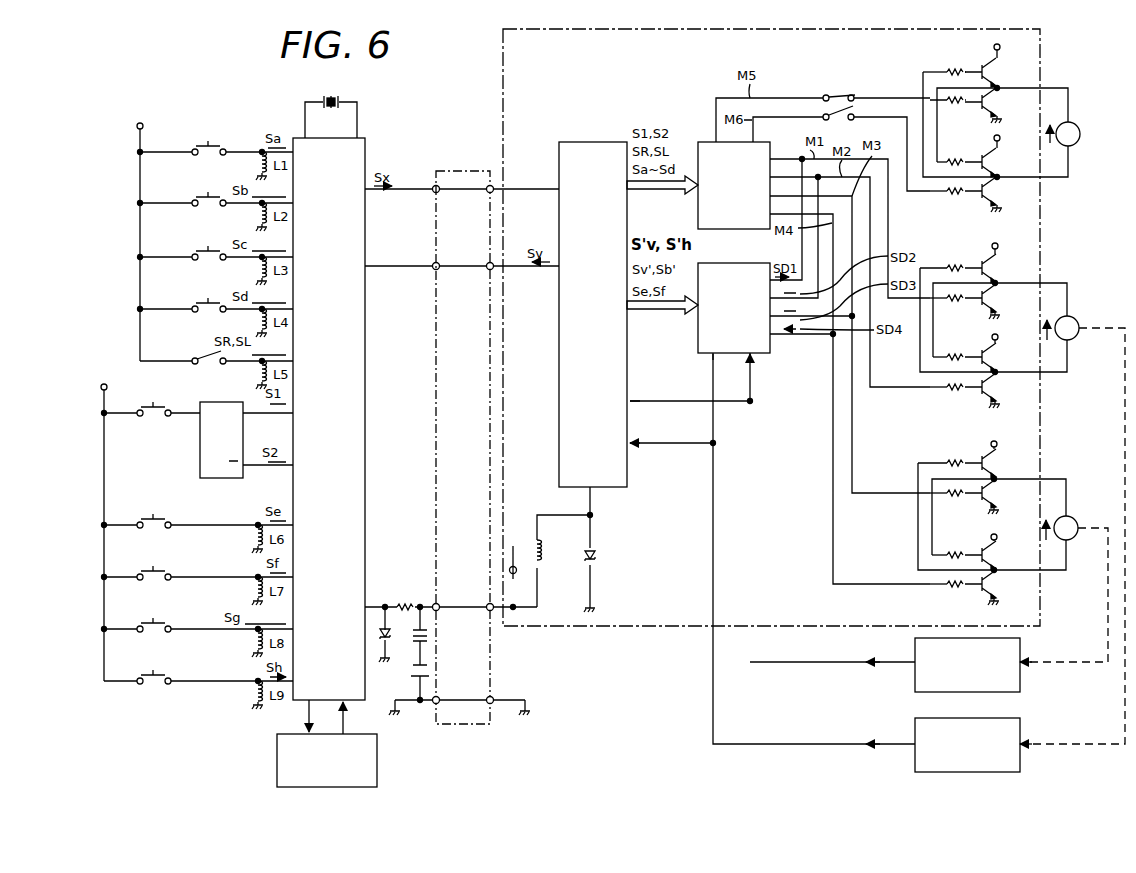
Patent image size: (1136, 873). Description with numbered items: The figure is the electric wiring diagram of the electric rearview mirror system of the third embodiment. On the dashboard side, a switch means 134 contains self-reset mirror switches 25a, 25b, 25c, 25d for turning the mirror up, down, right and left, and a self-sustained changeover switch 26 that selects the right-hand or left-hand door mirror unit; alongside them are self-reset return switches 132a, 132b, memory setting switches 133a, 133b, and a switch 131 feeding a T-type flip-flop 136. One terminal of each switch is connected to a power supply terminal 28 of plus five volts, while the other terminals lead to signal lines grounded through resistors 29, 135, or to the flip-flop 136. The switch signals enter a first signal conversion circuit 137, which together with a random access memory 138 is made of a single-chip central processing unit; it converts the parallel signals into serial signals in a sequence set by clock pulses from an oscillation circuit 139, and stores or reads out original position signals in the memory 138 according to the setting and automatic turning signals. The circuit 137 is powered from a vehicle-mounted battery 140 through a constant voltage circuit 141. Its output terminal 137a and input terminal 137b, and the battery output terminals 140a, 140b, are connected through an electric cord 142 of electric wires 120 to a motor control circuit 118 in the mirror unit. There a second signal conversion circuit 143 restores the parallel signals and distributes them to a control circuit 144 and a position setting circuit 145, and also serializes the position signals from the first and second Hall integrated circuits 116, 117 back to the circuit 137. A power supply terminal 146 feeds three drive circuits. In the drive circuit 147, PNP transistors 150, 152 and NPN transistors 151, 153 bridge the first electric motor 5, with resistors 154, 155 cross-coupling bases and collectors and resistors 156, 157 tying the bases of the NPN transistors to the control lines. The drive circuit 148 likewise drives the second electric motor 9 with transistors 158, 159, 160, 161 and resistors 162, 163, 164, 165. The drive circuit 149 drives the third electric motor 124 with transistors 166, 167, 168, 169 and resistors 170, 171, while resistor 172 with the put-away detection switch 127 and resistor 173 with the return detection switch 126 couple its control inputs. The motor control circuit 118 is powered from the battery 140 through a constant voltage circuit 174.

The power supply terminal 28 is at (137, 125).
The mirror switch 25a is at (202, 142).
The mirror switch 25b is at (202, 194).
The mirror switch 25c is at (202, 248).
The mirror switch 25d is at (202, 300).
The changeover switch 26 is at (197, 353).
The resistor 29 is at (251, 270).
The switch 131 is at (158, 415).
The T-type flip-flop 136 is at (200, 458).
The return switch 132a is at (152, 518).
The return switch 132b is at (154, 570).
The memory setting switch 133a is at (154, 622).
The memory setting switch 133b is at (152, 674).
The pull-down resistor 135 is at (242, 616).
The switch means 134 is at (218, 110).
The oscillation circuit 139 is at (331, 104).
The first signal conversion circuit 137 is at (365, 140).
The output terminal 137a is at (433, 192).
The input terminal 137b is at (433, 269).
The electric cord 142 is at (448, 170).
The electric wire 120 is at (460, 192).
The second signal conversion circuit 143 is at (590, 142).
The control circuit 144 is at (698, 213).
The position setting circuit 145 is at (698, 340).
The return detection switch 126 is at (822, 96).
The put-away detection switch 127 is at (839, 94).
The resistor 170 is at (962, 58).
The transistor 166 is at (1002, 74).
The transistor 167 is at (1002, 105).
The resistor 172 is at (955, 112).
The resistor 171 is at (958, 151).
The transistor 168 is at (1002, 164).
The transistor 169 is at (1002, 194).
The resistor 173 is at (955, 203).
The power supply terminal 146 is at (512, 566).
The drive circuit 149 is at (1034, 75).
The motor control circuit 118 is at (1052, 48).
The third electric motor 124 is at (1081, 134).
The resistor 154 is at (962, 255).
The PNP transistor 150 is at (1001, 270).
The NPN transistor 151 is at (1001, 301).
The resistor 156 is at (955, 310).
The resistor 155 is at (956, 346).
The PNP transistor 152 is at (1001, 359).
The NPN transistor 153 is at (1001, 390).
The resistor 157 is at (955, 399).
The drive circuit 147 is at (1028, 273).
The first electric motor 5 is at (1077, 318).
The resistor 162 is at (962, 450).
The transistor 158 is at (1001, 465).
The transistor 159 is at (1001, 496).
The resistor 164 is at (955, 505).
The resistor 163 is at (956, 544).
The transistor 160 is at (1001, 557).
The transistor 161 is at (1001, 587).
The resistor 165 is at (955, 596).
The drive circuit 148 is at (1028, 471).
The second electric motor 9 is at (1077, 518).
The second Hall integrated circuit 117 is at (1020, 652).
The first Hall integrated circuit 116 is at (1020, 732).
The constant voltage circuit 174 is at (596, 555).
The constant voltage circuit 141 is at (385, 605).
The vehicle-mounted battery 140 is at (418, 644).
The output terminal 140a is at (434, 605).
The output terminal 140b is at (434, 704).
The random access memory 138 is at (377, 764).